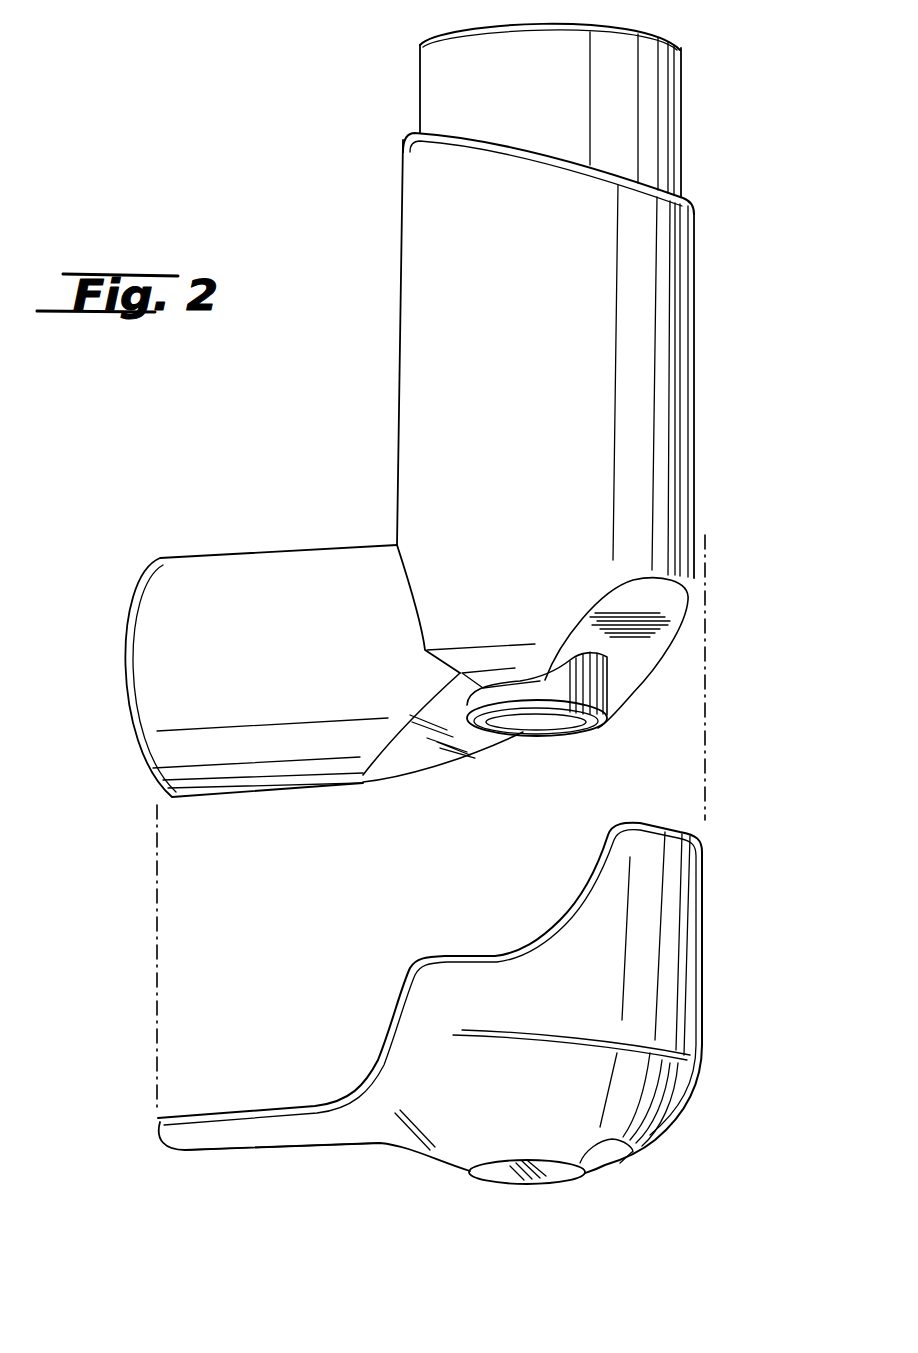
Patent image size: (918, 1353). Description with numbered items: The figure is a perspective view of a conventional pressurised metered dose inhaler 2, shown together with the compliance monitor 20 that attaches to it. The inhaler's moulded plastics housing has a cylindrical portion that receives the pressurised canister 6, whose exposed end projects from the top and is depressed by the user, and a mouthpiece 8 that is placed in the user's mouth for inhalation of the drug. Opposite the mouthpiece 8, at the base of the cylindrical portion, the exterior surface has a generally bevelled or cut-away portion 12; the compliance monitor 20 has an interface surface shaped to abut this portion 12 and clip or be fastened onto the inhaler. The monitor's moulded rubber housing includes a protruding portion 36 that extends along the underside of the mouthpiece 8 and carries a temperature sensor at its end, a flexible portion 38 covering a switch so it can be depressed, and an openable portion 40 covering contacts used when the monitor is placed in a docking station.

The pressurised metered dose inhaler 2 is at (723, 297).
The pressurised canister 6 is at (438, 80).
The mouthpiece 8 is at (155, 651).
The bevelled portion 12 is at (615, 676).
The compliance monitor 20 is at (675, 951).
The protruding portion 36 is at (283, 1133).
The flexible portion 38 is at (500, 1175).
The openable portion 40 is at (617, 1153).